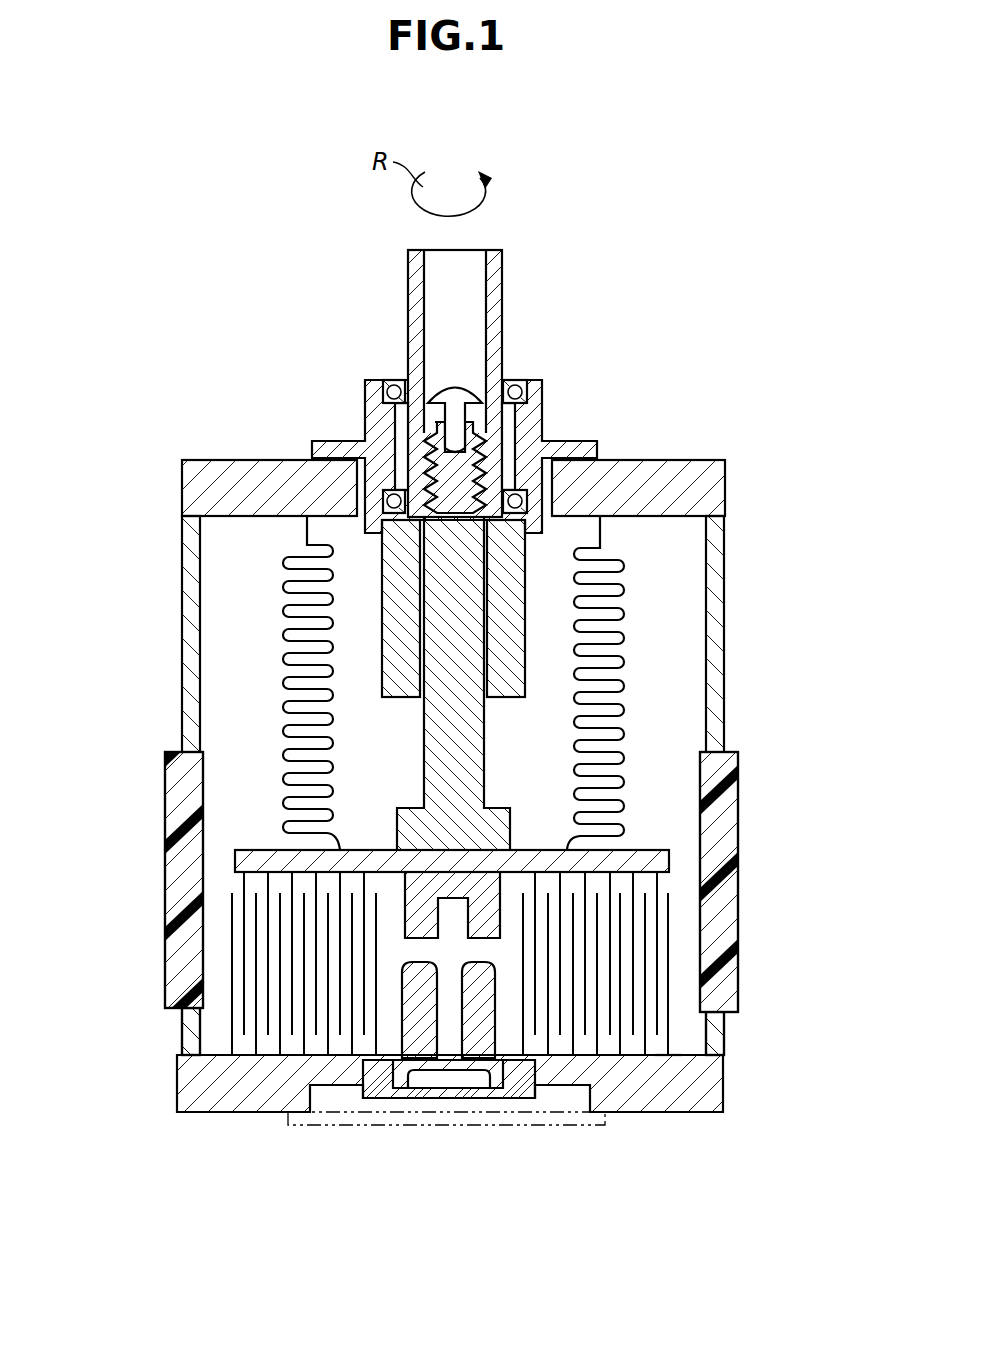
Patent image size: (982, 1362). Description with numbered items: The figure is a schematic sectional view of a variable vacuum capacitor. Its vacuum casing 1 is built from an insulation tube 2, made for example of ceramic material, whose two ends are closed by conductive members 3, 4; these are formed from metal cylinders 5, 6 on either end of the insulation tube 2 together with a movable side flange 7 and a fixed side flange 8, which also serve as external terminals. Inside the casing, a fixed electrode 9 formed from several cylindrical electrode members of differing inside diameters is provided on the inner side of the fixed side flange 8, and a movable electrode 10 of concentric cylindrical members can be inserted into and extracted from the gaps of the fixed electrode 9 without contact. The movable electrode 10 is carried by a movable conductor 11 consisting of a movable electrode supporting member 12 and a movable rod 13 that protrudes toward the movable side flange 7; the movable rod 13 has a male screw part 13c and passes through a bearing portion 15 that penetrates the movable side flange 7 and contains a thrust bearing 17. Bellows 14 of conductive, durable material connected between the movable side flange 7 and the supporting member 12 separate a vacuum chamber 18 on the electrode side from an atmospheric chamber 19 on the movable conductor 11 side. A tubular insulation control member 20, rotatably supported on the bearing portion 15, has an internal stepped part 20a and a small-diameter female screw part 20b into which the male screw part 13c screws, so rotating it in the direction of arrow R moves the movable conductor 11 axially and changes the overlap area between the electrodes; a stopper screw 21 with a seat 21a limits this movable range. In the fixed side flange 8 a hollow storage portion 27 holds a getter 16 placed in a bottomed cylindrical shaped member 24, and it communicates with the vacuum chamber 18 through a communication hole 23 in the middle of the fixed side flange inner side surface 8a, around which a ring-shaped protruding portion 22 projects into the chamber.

The vacuum casing 1 is at (740, 672).
The insulation tube 2 is at (165, 875).
The conductive member 3 is at (738, 1178).
The conductive member 4 is at (808, 385).
The metal cylinder 5 is at (715, 1072).
The metal cylinder 6 is at (718, 538).
The movable side flange 7 is at (680, 472).
The fixed side flange 8 is at (672, 1092).
The fixed side flange inner side surface 8a is at (682, 1057).
The fixed electrode 9 is at (222, 1037).
The movable electrode 10 is at (243, 1023).
The movable conductor 11 is at (75, 685).
The movable electrode supporting member 12 is at (260, 860).
The movable rod 13 is at (430, 746).
The male screw part 13c is at (392, 493).
The bellows 14 is at (623, 568).
The bearing portion 15 is at (543, 420).
The getter 16 is at (420, 1078).
The thrust bearing 17 is at (510, 388).
The vacuum chamber 18 is at (217, 597).
The atmospheric chamber 19 is at (313, 528).
The insulation control member 20 is at (254, 302).
The stepped part 20a is at (432, 398).
The female screw part 20b is at (413, 445).
The stopper screw 21 is at (455, 387).
The seat 21a is at (488, 420).
The ring-shaped protruding portion 22 is at (410, 962).
The communication hole 23 is at (450, 1030).
The bottomed cylindrical shaped member 24 is at (440, 1097).
The storage portion 27 is at (330, 1102).